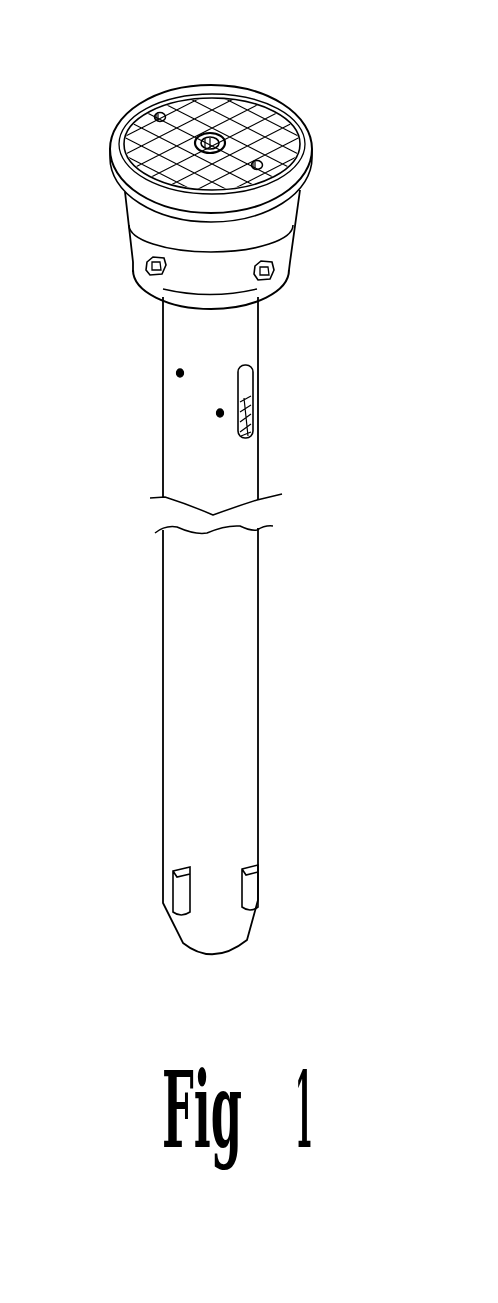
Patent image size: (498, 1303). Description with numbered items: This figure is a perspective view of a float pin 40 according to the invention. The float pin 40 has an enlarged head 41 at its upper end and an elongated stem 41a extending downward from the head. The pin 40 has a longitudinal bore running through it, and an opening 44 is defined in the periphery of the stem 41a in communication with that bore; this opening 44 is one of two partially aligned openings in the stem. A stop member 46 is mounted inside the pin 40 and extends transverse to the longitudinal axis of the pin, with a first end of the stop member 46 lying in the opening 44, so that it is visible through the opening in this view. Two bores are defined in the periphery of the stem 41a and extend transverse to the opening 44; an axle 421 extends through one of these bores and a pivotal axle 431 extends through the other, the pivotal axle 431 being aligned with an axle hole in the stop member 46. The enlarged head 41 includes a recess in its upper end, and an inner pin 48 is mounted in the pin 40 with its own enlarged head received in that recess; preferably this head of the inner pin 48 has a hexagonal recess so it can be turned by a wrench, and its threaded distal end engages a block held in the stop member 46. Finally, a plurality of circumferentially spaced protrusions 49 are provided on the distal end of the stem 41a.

The float pin 40 is at (231, 479).
The enlarged head 41 is at (268, 112).
The stem 41a is at (250, 625).
The inner pin 48 is at (207, 134).
The axle 421 is at (175, 371).
The pivotal axle 431 is at (214, 413).
The opening 44 is at (251, 387).
The stop member 46 is at (252, 432).
The protrusions 49 is at (259, 890).